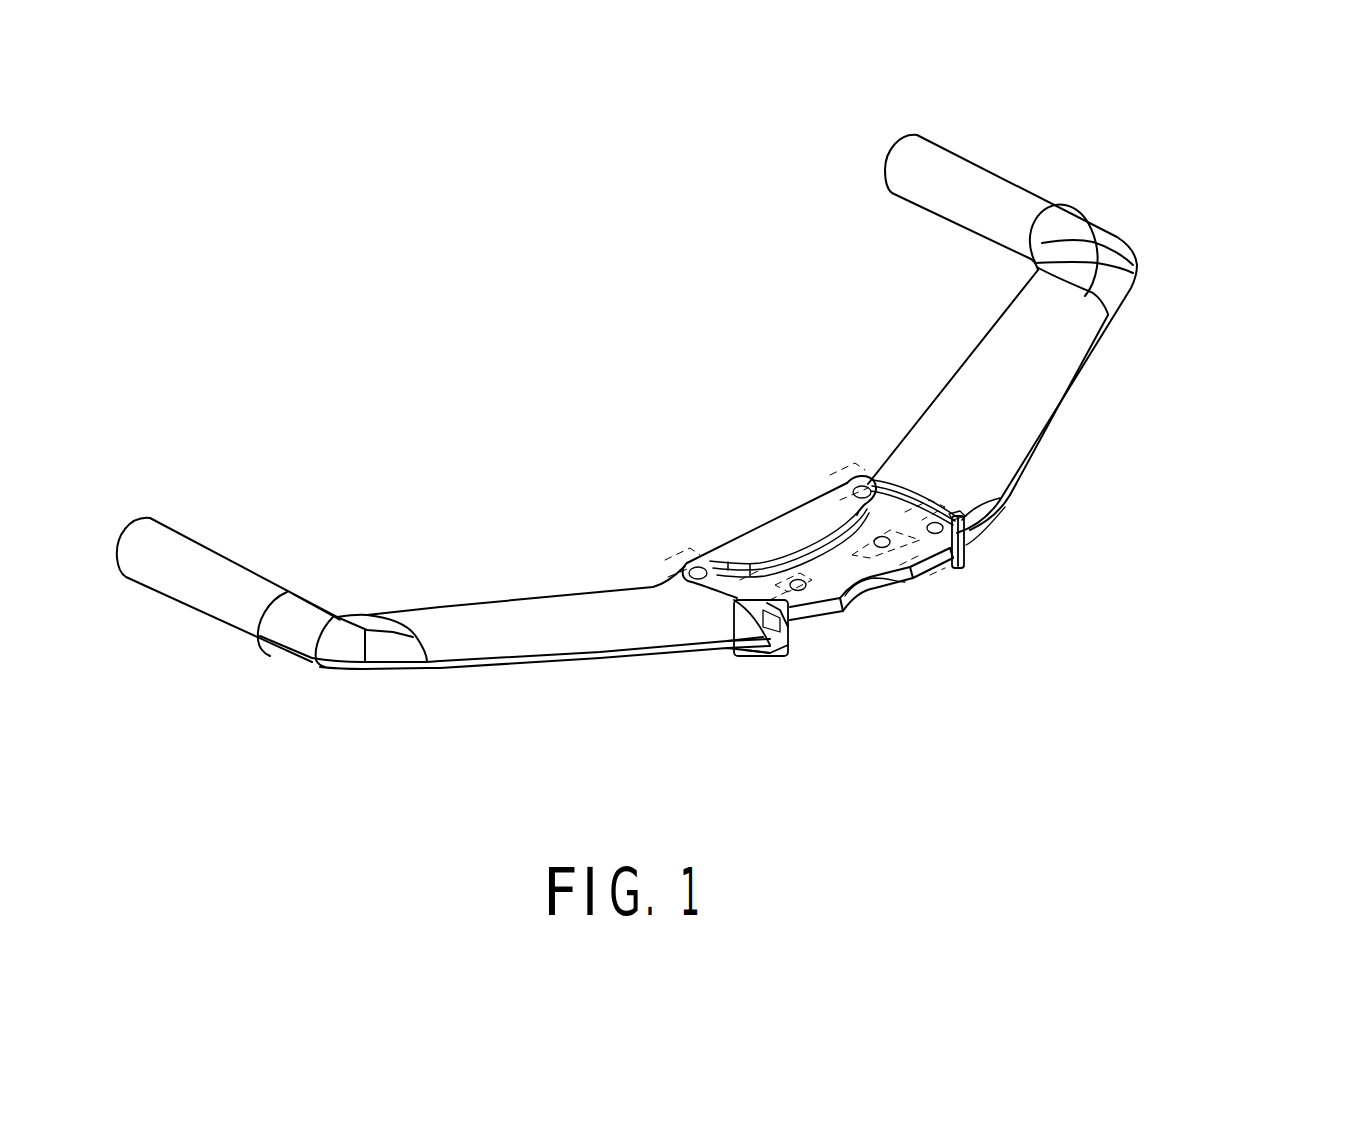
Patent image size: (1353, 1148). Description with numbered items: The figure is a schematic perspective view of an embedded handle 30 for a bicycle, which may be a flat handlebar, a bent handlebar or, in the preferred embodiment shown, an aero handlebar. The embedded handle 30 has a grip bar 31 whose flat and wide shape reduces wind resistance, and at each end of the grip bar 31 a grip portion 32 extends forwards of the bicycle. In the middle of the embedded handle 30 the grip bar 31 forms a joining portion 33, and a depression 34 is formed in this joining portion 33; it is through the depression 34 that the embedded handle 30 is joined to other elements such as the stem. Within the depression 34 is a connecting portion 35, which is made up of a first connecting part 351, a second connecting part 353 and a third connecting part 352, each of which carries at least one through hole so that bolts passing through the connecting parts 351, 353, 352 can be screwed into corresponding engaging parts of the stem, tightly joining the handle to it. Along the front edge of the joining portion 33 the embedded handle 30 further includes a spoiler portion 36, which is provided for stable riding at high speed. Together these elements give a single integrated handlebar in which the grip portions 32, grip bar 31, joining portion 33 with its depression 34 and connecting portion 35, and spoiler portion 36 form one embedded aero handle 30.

The embedded handle 30 is at (1176, 222).
The grip bar 31 is at (580, 628).
The grip portions 32 is at (178, 583).
The joining portion 33 is at (716, 528).
The depression 34 is at (975, 548).
The connecting portion 35 is at (1054, 722).
The spoiler portion 36 is at (768, 512).
The first connecting part 351 is at (962, 570).
The third connecting part 352 is at (880, 592).
The second connecting part 353 is at (790, 625).